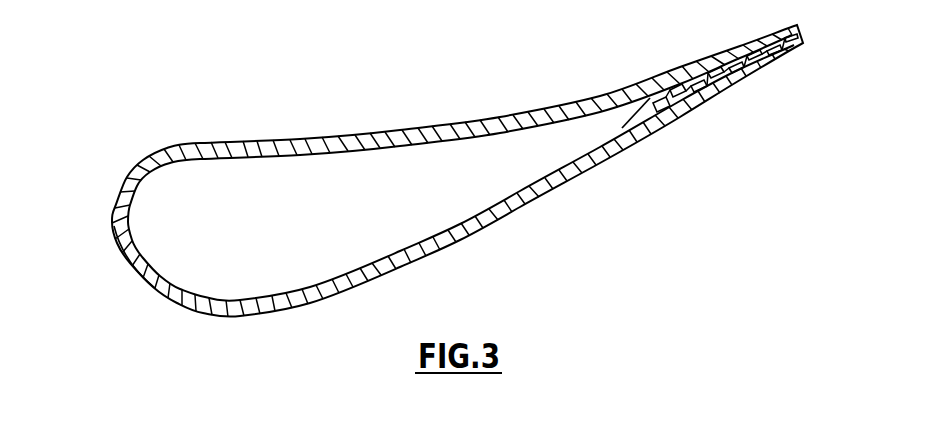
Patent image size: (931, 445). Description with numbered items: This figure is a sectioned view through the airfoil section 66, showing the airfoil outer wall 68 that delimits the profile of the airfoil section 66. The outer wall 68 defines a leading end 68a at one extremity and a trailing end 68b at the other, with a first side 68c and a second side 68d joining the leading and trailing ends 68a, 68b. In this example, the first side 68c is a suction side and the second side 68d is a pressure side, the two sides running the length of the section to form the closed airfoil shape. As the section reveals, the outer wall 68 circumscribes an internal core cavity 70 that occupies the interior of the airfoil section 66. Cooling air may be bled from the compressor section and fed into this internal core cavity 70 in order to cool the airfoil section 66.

The airfoil section 66 is at (230, 326).
The airfoil outer wall 68 is at (267, 152).
The leading end 68a is at (104, 238).
The trailing end 68b is at (808, 58).
The first side 68c is at (347, 288).
The second side 68d is at (400, 132).
The internal core cavity 70 is at (333, 232).